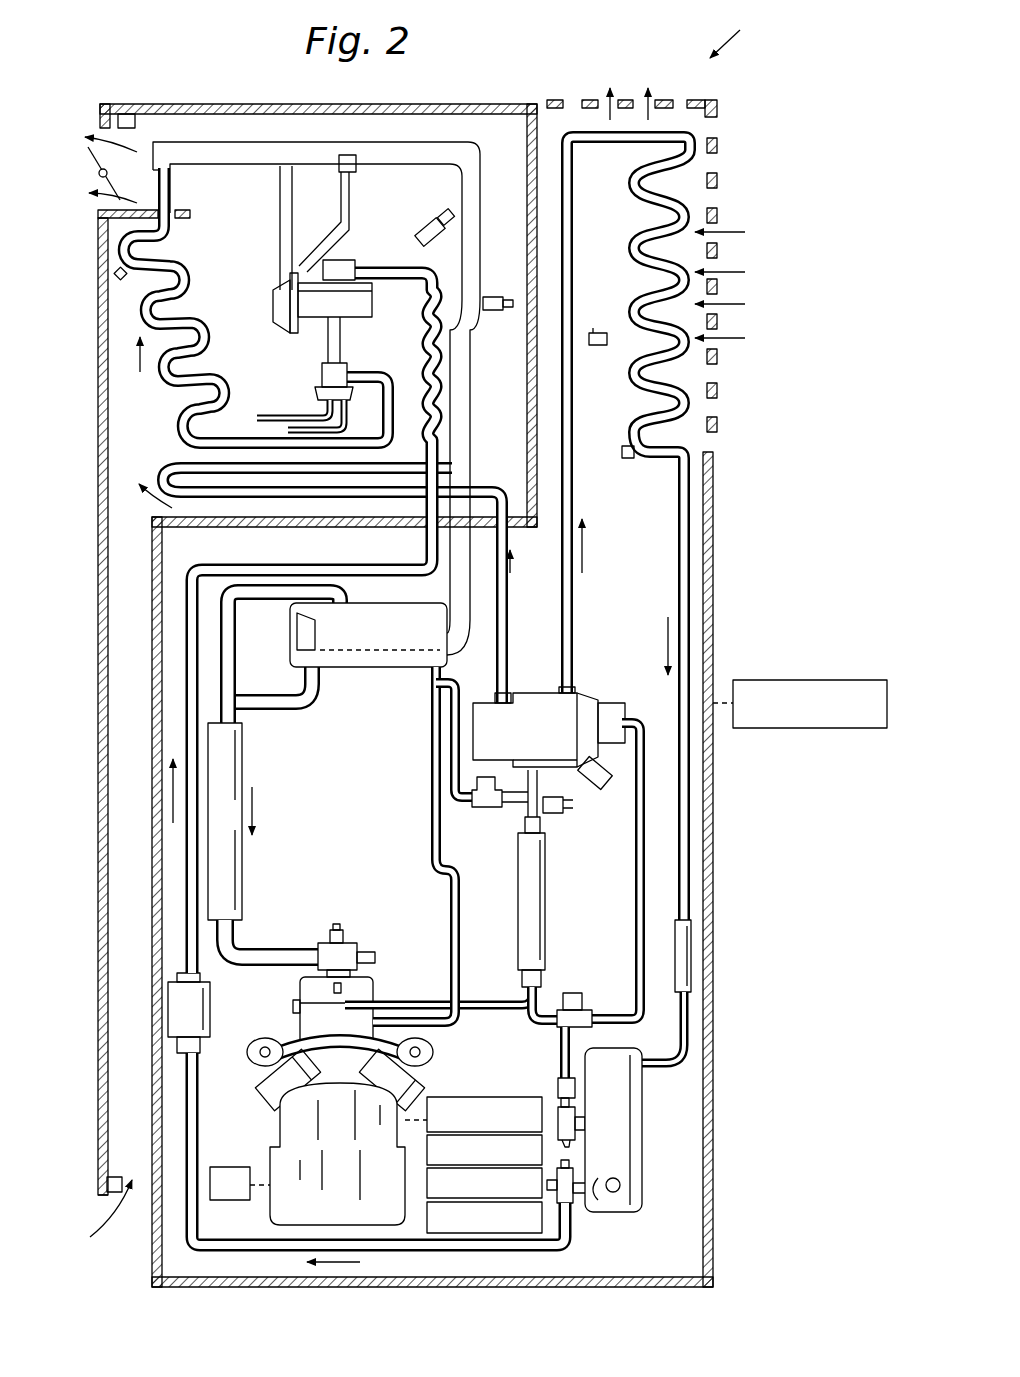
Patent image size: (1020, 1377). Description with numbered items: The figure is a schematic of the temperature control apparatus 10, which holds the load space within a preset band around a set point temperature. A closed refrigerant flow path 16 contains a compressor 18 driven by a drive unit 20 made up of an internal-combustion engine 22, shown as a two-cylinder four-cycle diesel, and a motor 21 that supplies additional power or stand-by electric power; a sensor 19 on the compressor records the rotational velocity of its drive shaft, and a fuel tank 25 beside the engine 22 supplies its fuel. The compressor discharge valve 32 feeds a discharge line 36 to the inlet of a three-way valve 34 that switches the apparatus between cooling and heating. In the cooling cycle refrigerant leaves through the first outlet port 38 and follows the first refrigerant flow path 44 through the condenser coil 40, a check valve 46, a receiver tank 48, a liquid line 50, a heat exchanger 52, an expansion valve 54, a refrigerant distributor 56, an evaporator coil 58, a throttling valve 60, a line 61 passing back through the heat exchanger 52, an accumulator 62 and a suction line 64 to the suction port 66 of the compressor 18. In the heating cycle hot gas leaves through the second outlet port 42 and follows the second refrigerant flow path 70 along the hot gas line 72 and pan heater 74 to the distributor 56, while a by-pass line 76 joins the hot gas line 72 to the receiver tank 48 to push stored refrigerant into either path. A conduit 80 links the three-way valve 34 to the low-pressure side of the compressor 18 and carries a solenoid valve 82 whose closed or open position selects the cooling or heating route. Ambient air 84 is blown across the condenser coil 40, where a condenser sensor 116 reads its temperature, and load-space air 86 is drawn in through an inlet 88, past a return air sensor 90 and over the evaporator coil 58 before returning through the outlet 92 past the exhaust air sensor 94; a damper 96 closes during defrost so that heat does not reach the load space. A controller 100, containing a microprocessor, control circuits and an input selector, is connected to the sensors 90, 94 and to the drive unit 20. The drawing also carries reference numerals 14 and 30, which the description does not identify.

The temperature control apparatus 10 is at (772, 48).
The enclosure wall 14 is at (98, 705).
The closed refrigerant flow path 16 is at (577, 480).
The compressor 18 is at (358, 1163).
The sensor 19 is at (237, 1157).
The drive unit 20 is at (457, 1145).
The motor 21 is at (447, 1097).
The internal-combustion engine 22 is at (430, 1190).
The fuel tank 25 is at (542, 1218).
The coupling 30 is at (427, 1153).
The discharge valve 32 is at (330, 997).
The three-way valve 34 is at (557, 733).
The discharge line 36 is at (408, 1003).
The first outlet port 38 is at (580, 688).
The condenser coil 40 is at (630, 247).
The second outlet port 42 is at (509, 692).
The first refrigerant flow path 44 is at (330, 1258).
The check valve 46 is at (692, 958).
The receiver tank 48 is at (615, 1122).
The liquid line 50 is at (560, 1248).
The heat exchanger 52 is at (471, 375).
The expansion valve 54 is at (276, 311).
The refrigerant distributor 56 is at (320, 373).
The evaporator coil 58 is at (182, 274).
The throttling valve 60 is at (421, 223).
The line 61 is at (420, 321).
The accumulator 62 is at (421, 616).
The suction line 64 is at (247, 950).
The suction port 66 is at (350, 945).
The second refrigerant flow path 70 is at (110, 516).
The hot gas line 72 is at (504, 537).
The pan heater 74 is at (172, 464).
The by-pass line 76 is at (431, 836).
The conduit 80 is at (636, 861).
The valve 82 is at (574, 995).
The ambient air 84 is at (735, 273).
The air 86 is at (106, 1223).
The inlet 88 is at (117, 1197).
The return air sensor 90 is at (116, 1176).
The outlet 92 is at (100, 214).
The exhaust air sensor 94 is at (123, 114).
The damper 96 is at (92, 158).
The controller 100 is at (817, 680).
The condenser sensor 116 is at (597, 332).